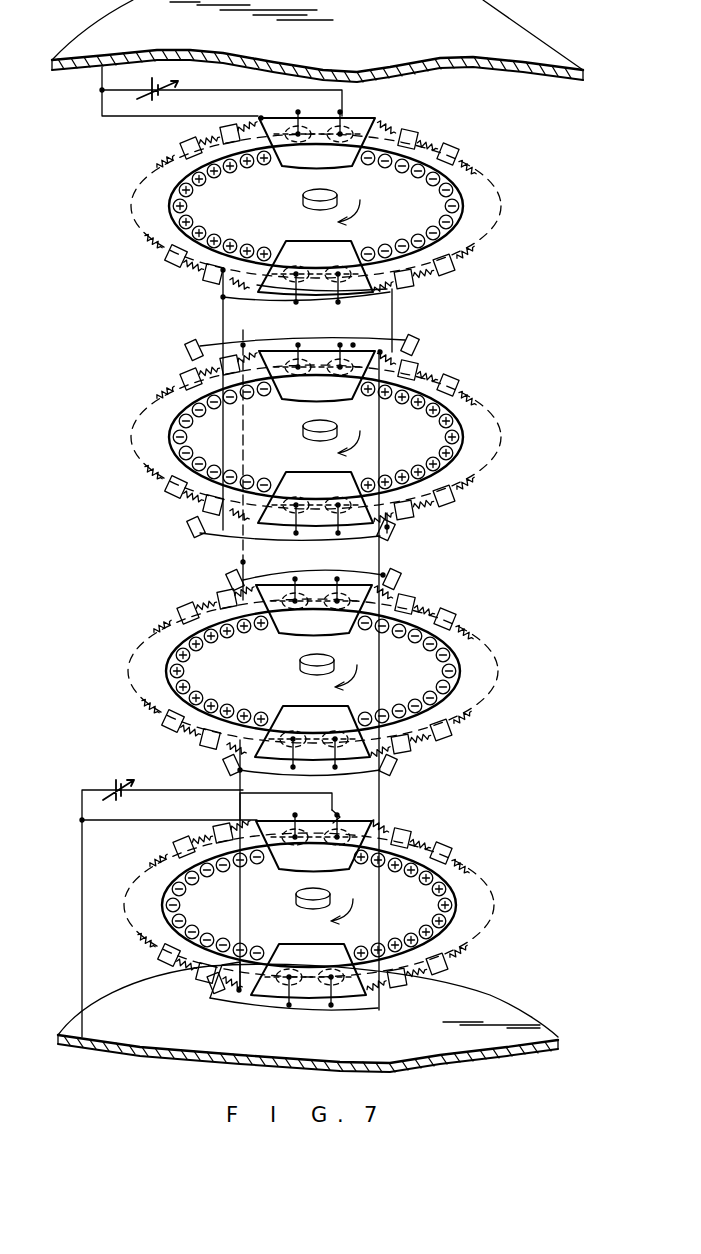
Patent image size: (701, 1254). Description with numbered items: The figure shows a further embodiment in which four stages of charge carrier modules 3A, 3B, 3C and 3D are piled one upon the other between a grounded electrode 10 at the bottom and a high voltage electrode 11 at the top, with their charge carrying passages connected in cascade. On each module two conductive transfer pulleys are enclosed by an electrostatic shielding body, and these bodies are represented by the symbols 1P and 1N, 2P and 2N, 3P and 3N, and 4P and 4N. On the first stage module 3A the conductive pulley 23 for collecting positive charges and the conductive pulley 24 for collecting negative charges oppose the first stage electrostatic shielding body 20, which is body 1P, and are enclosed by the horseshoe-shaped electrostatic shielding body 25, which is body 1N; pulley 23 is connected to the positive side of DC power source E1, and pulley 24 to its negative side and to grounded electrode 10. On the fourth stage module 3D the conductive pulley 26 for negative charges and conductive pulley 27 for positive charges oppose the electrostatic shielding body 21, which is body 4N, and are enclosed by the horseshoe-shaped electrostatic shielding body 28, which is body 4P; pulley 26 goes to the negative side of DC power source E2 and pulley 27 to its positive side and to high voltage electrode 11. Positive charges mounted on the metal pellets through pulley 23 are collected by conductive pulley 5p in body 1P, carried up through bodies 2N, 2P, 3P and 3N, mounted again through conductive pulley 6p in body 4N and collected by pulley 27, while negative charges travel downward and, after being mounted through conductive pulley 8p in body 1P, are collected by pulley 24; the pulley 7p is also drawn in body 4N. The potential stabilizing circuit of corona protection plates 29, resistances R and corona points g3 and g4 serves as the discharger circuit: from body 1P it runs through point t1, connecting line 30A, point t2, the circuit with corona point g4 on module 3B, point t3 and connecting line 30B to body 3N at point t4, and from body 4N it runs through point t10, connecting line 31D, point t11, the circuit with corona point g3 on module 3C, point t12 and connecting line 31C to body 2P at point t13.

The grounded electrode 10 is at (418, 1057).
The high voltage electrode 11 is at (440, 58).
The DC power source E1 is at (118, 786).
The DC power source E2 is at (168, 80).
The charge carrier module 3A is at (309, 911).
The charge carrier module 3B is at (313, 681).
The charge carrier module 3C is at (316, 439).
The charge carrier module 3D is at (316, 194).
The electrostatic shielding body 1P is at (312, 977).
The electrostatic shielding body 1N is at (314, 860).
The electrostatic shielding body 2P is at (314, 606).
The electrostatic shielding body 2N is at (312, 737).
The electrostatic shielding body 3P is at (317, 372).
The electrostatic shielding body 3N is at (315, 503).
The electrostatic shielding body 4P is at (340, 138).
The electrostatic shielding body 4N is at (324, 259).
The first stage electrostatic shielding body 20 is at (308, 955).
The second electrostatic shielding body 21 is at (324, 255).
The conductive pulley 23 is at (347, 860).
The conductive pulley 24 is at (286, 807).
The horseshoe-shaped electrostatic shielding body 25 is at (353, 801).
The conductive pulley 26 is at (355, 113).
The conductive pulley 27 is at (284, 151).
The horseshoe-shaped electrostatic shielding body 28 is at (340, 131).
The corona protection plates 29 is at (447, 270).
The resistances R is at (463, 260).
The connecting line 30A is at (216, 911).
The connecting line 30B is at (355, 466).
The connecting line 31C is at (243, 429).
The connecting line 31D is at (393, 320).
The corona point g3 is at (130, 427).
The corona point g4 is at (127, 679).
The conductive pulley 5p is at (346, 1006).
The conductive pulley 6p is at (283, 259).
The coil lead 7p is at (331, 260).
The conductive pulley 8p is at (281, 1006).
The point t1 is at (220, 1013).
The point t2 is at (217, 781).
The point t3 is at (408, 580).
The point t4 is at (412, 353).
The point t10 is at (369, 329).
The point t11 is at (413, 536).
The point t12 is at (252, 329).
The point t13 is at (271, 556).